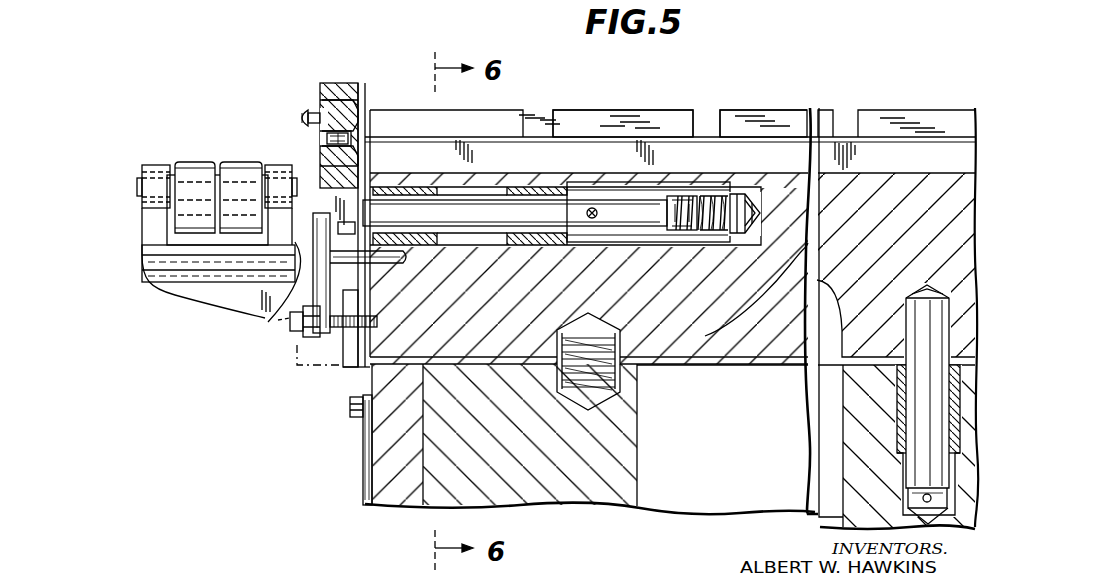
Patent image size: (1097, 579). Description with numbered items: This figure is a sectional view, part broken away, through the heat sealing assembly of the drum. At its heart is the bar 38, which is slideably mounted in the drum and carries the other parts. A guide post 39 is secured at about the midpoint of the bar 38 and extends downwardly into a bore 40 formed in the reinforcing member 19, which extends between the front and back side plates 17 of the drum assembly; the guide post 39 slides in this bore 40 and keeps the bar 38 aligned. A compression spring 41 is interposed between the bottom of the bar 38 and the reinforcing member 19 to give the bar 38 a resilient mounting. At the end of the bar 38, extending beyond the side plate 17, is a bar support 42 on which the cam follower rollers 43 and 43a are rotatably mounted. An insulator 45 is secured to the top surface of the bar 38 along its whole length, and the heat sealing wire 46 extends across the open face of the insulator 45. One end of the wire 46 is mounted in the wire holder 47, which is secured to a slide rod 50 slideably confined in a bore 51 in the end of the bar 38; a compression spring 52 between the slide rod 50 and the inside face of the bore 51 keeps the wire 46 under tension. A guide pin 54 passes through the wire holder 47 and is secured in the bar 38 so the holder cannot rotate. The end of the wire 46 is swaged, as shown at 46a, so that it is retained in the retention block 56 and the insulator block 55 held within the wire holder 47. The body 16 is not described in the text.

The body 16 is at (508, 103).
The side plate 17 is at (390, 460).
The reinforcing member 19 is at (612, 490).
The bar 38 is at (838, 182).
The guide post 39 is at (915, 472).
The bore 40 is at (953, 508).
The compression spring 41 is at (620, 334).
The bar support 42 is at (303, 351).
The cam follower roller 43 is at (245, 166).
The cam follower roller 43a is at (197, 172).
The insulator 45 is at (706, 150).
The heat sealing wire 46 is at (543, 133).
The swaged end 46a is at (327, 140).
The wire holder 47 is at (345, 82).
The slide rod 50 is at (522, 222).
The bore 51 is at (653, 242).
The compression spring 52 is at (750, 203).
The guide pin 54 is at (407, 263).
The insulator block 55 is at (345, 99).
The retention block 56 is at (332, 107).